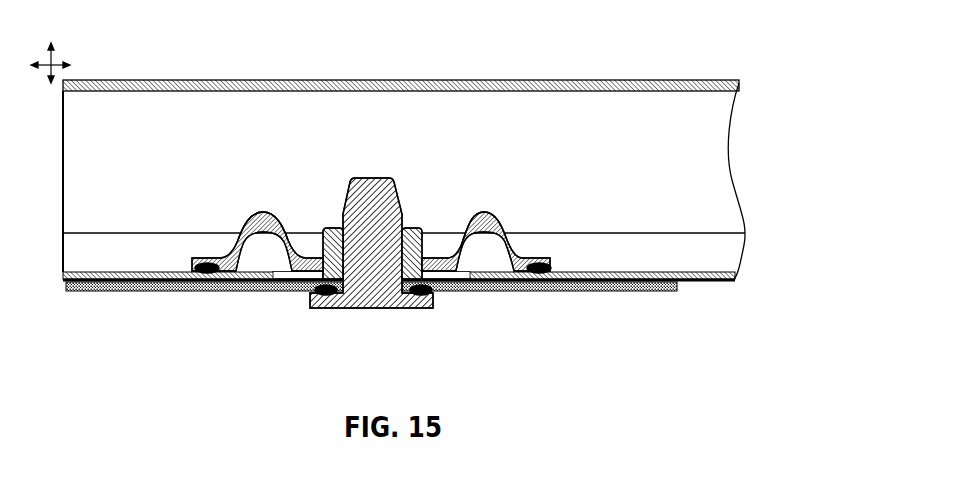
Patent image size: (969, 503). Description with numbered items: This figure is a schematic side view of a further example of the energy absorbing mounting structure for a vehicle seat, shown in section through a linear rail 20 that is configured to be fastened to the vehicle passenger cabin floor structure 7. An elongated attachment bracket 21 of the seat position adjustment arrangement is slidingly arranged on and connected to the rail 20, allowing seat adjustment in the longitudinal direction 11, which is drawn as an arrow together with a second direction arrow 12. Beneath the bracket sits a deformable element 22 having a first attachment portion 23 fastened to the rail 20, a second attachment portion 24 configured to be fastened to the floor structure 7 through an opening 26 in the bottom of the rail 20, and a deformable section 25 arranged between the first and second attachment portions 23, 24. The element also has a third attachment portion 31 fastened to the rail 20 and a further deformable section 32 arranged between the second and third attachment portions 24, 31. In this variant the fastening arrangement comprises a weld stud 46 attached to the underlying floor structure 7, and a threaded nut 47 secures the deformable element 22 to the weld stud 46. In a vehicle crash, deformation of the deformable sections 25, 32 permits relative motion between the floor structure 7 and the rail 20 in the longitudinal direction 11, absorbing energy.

The vehicle passenger cabin floor structure 7 is at (80, 292).
The longitudinal direction 11 is at (62, 56).
The second direction 12 is at (58, 52).
The rail 20 is at (486, 198).
The elongated attachment bracket 21 is at (630, 82).
The deformable element 22 is at (257, 154).
The first attachment portion 23 is at (227, 275).
The second attachment portion 24 is at (415, 273).
The deformable section 25 is at (252, 210).
The opening 26 is at (280, 277).
The third attachment portion 31 is at (553, 234).
The further deformable section 32 is at (484, 211).
The weld stud 46 is at (355, 304).
The threaded nut 47 is at (333, 226).